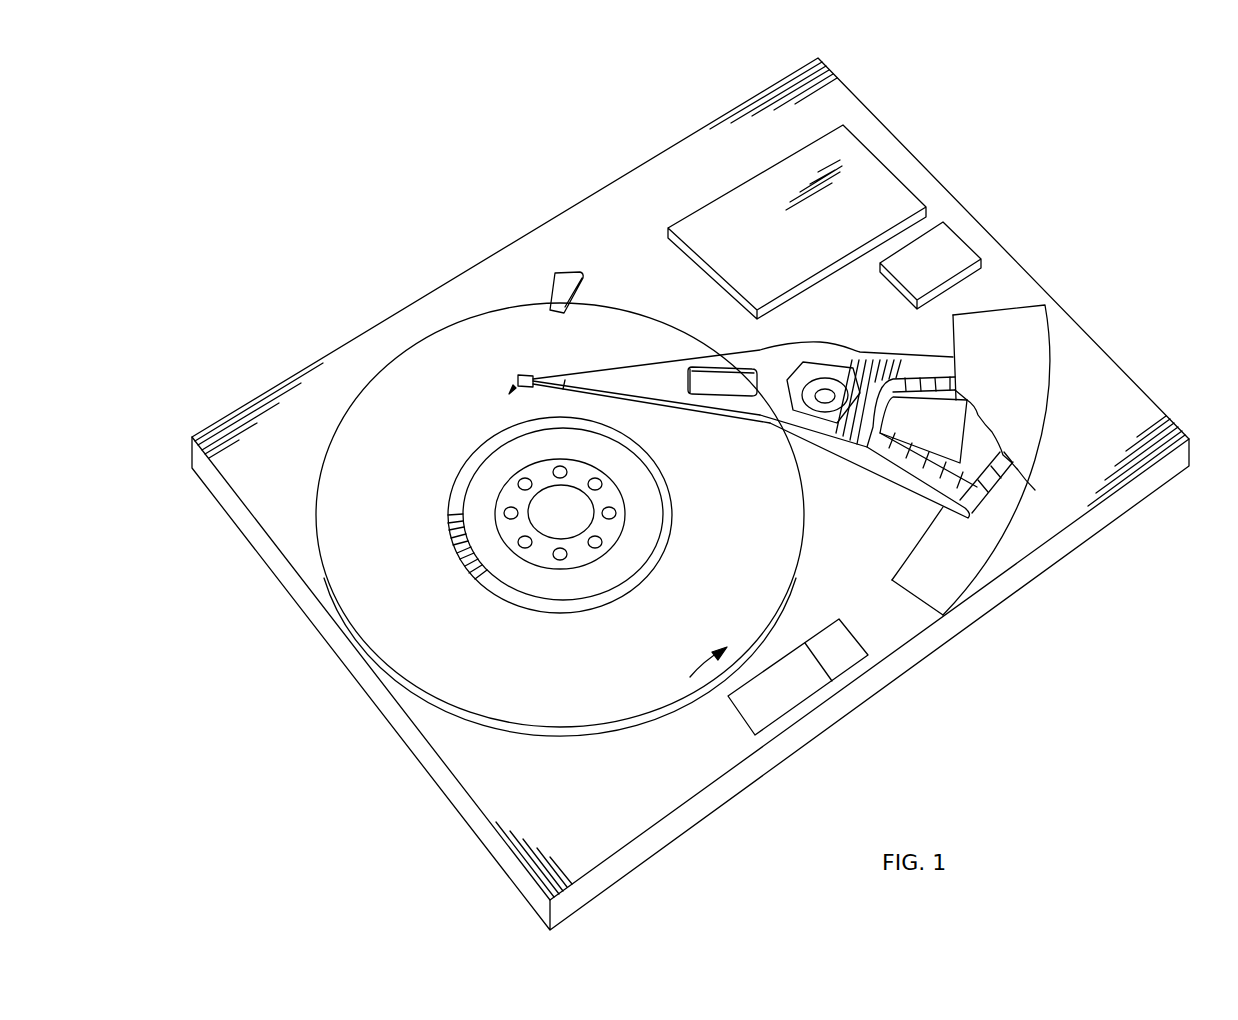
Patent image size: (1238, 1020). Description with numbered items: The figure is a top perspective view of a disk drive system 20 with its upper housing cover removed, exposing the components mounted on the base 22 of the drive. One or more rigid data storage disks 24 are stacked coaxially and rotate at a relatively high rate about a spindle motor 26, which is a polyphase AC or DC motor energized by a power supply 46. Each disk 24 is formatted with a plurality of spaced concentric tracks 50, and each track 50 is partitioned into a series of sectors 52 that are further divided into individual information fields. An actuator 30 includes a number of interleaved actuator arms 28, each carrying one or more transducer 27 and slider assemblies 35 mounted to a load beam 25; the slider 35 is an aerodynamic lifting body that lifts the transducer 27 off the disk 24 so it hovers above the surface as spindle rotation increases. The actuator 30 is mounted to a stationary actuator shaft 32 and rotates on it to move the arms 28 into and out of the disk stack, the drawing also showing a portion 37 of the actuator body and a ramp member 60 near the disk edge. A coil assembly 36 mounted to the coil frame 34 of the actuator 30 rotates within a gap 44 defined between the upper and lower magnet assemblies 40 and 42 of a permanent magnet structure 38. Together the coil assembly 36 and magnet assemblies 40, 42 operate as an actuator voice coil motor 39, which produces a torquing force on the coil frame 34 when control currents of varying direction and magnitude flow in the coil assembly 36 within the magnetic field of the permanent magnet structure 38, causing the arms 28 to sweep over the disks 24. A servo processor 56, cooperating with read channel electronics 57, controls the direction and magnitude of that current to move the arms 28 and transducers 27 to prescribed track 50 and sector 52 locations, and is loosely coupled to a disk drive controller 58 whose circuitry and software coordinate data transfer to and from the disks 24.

The disk drive system 20 is at (995, 182).
The base plate 22 is at (858, 695).
The rigid data storage disk 24 is at (378, 499).
The load beam 25 is at (548, 383).
The spindle motor 26 is at (580, 540).
The transducer 27 is at (512, 392).
The actuator arm 28 is at (665, 387).
The actuator 30 is at (837, 440).
The actuator shaft 32 is at (825, 388).
The coil frame 34 is at (876, 378).
The slider assembly 35 is at (518, 378).
The coil assembly 36 is at (893, 395).
The arm portion 37 is at (816, 451).
The permanent magnet structure 38 is at (1047, 337).
The actuator voice coil motor 39 is at (941, 508).
The upper magnet assembly 40 is at (1040, 395).
The lower magnet assembly 42 is at (912, 583).
The gap 44 is at (1018, 476).
The power supply 46 is at (767, 258).
The track 50 is at (462, 468).
The sector 52 is at (456, 545).
The servo processor 56 is at (807, 685).
The read channel electronics 57 is at (849, 663).
The disk drive controller 58 is at (945, 270).
The head load ramp 60 is at (572, 273).